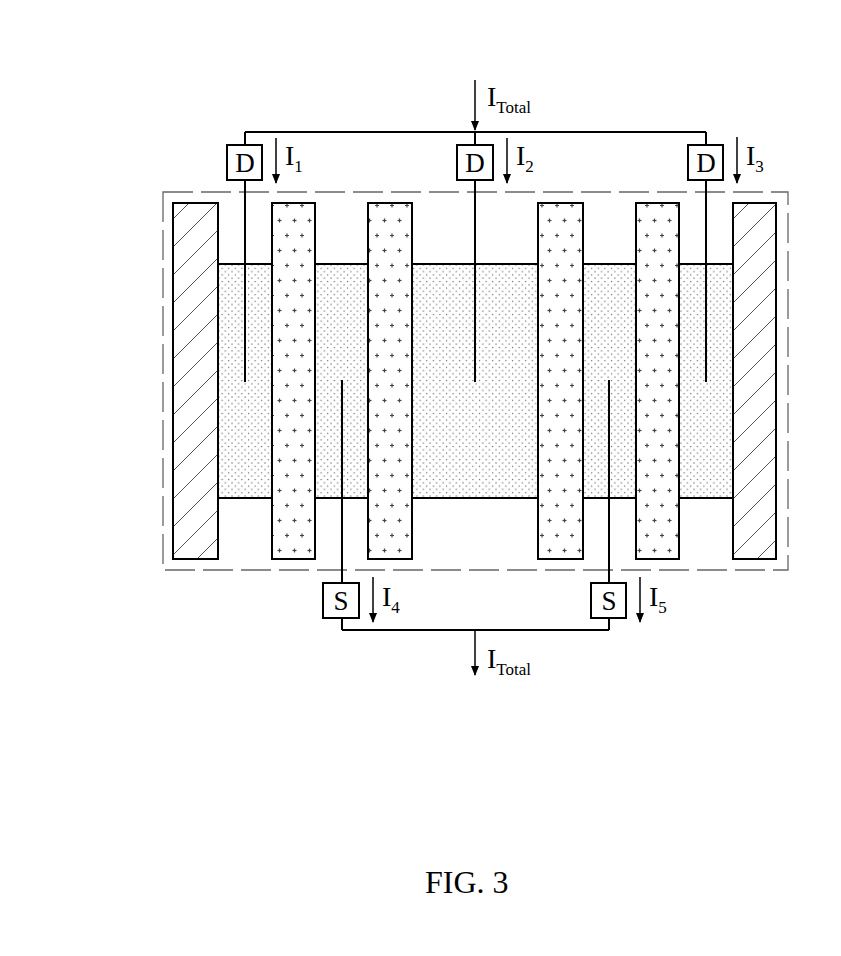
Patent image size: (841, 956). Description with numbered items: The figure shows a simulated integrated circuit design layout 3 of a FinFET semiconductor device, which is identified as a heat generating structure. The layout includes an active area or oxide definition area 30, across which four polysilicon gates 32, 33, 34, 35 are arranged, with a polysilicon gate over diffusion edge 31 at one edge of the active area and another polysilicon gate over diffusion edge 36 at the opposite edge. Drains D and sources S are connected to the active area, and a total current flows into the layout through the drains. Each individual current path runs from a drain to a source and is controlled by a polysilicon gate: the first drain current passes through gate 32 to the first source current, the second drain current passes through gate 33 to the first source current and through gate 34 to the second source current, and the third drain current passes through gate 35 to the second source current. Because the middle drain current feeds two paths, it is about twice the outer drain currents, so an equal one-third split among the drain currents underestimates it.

The simulated integrated circuit design layout 3 is at (145, 50).
The active area 30 is at (473, 482).
The polysilicon gate over diffusion edge 31 is at (195, 545).
The polysilicon gate 32 is at (296, 216).
The polysilicon gate 33 is at (406, 216).
The polysilicon gate 34 is at (555, 216).
The polysilicon gate 35 is at (660, 216).
The polysilicon gate over diffusion edge 36 is at (755, 545).